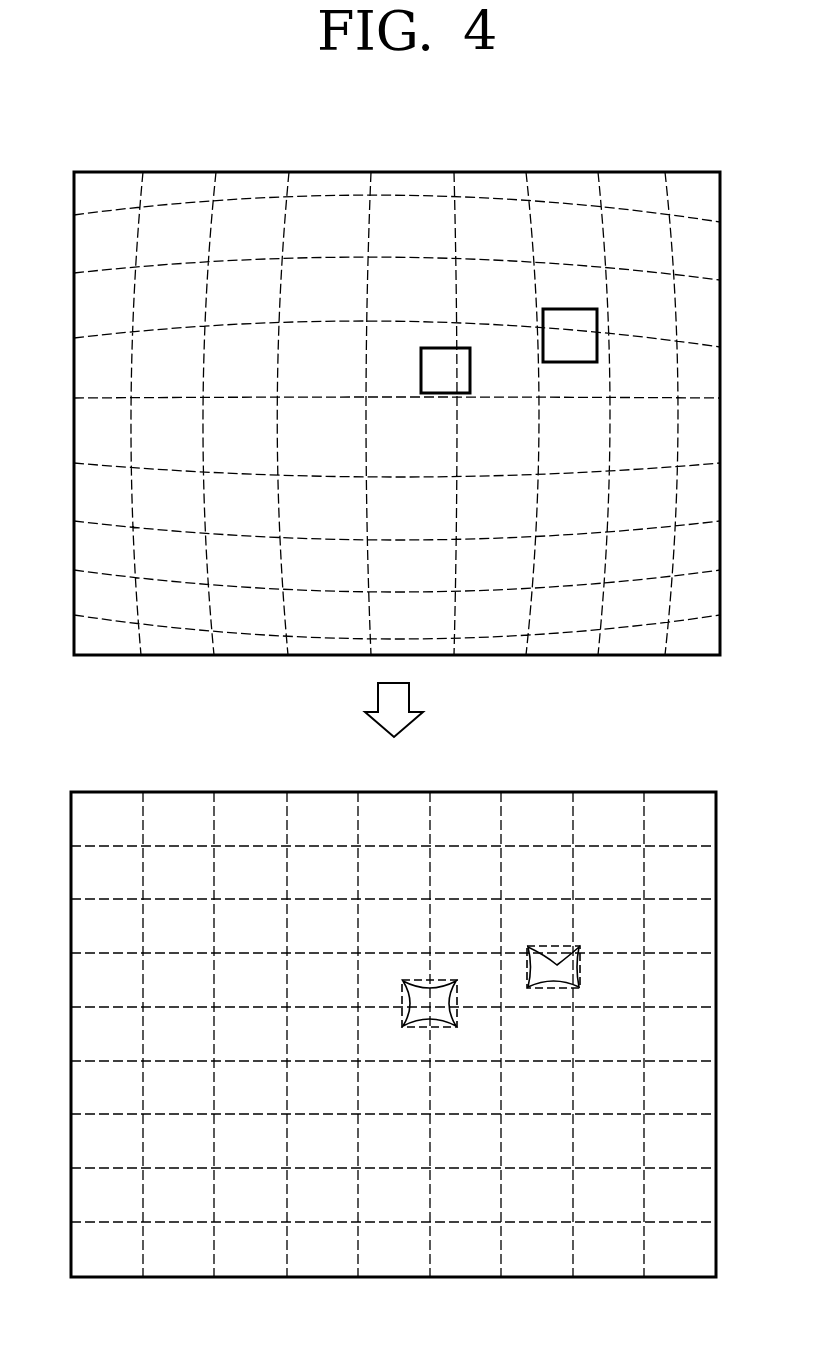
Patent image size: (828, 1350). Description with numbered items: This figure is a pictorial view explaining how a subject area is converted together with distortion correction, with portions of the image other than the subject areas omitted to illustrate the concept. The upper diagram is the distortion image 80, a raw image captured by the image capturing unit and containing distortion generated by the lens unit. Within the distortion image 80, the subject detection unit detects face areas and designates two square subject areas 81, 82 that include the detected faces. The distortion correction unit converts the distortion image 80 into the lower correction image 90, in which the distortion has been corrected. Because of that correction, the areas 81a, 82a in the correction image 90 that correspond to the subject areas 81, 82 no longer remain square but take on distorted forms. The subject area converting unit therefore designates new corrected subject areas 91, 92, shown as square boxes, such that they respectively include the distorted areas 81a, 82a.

The distortion image 80 is at (627, 172).
The subject area 81 is at (447, 348).
The subject area 82 is at (587, 309).
The correction image 90 is at (622, 792).
The corrected subject area 91 is at (420, 980).
The corrected subject area 92 is at (542, 946).
The area corresponding to subject area 81a is at (455, 993).
The area corresponding to subject area 82a is at (558, 963).